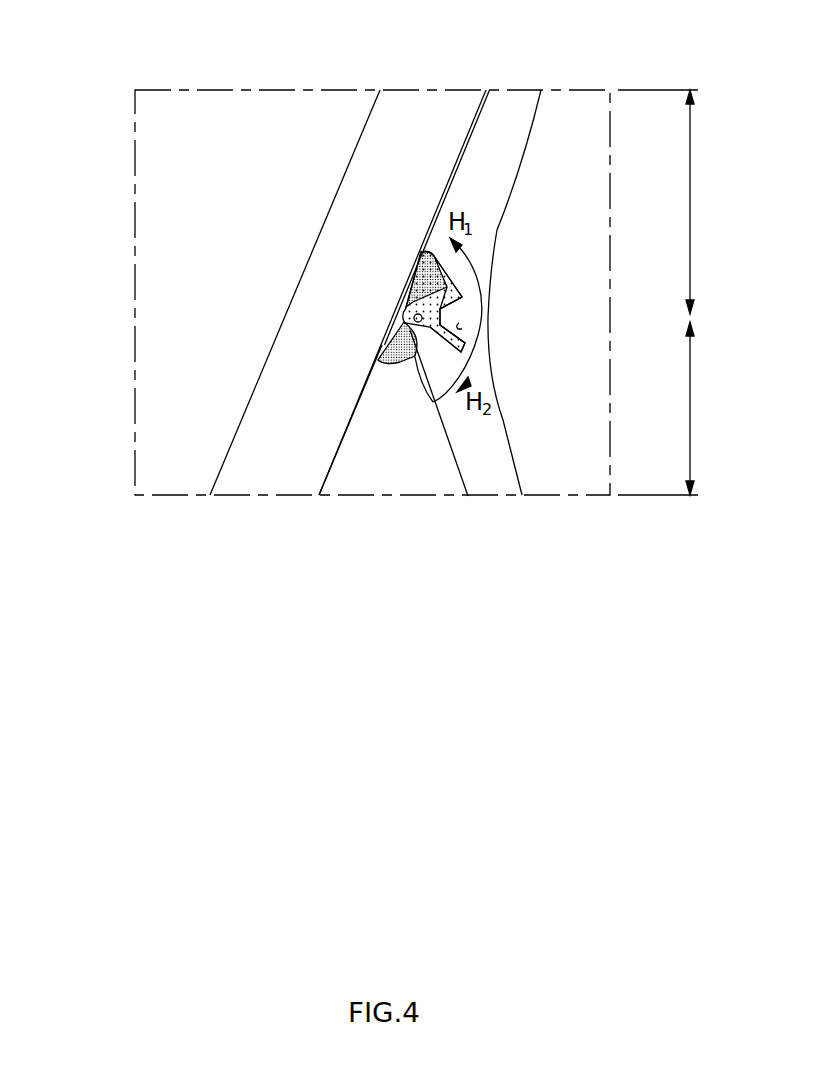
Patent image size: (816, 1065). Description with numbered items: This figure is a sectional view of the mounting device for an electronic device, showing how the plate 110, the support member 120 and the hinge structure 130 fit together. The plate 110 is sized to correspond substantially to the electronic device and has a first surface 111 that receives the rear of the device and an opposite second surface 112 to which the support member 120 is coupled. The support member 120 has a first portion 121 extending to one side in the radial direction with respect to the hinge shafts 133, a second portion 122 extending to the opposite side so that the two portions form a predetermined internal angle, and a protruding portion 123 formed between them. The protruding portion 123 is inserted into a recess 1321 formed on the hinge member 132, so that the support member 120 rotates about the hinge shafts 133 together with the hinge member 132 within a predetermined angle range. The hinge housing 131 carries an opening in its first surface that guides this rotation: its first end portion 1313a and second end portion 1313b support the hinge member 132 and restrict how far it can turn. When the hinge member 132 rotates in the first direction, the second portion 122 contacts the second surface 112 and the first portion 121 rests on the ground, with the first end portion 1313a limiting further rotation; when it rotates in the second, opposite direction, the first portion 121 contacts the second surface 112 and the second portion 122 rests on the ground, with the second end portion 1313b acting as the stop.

The plate 110 is at (452, 83).
The first surface 111 is at (368, 118).
The second surface 112 is at (328, 477).
The support member 120 is at (519, 83).
The first portion 121 is at (675, 408).
The second portion 122 is at (675, 202).
The protruding portion 123 is at (460, 325).
The hinge structure 130 is at (355, 305).
The hinge housing 131 is at (453, 276).
The hinge member 132 is at (424, 328).
The hinge shafts 133 is at (414, 318).
The first end portion 1313a is at (410, 292).
The second end portion 1313b is at (378, 357).
The recess 1321 is at (441, 318).